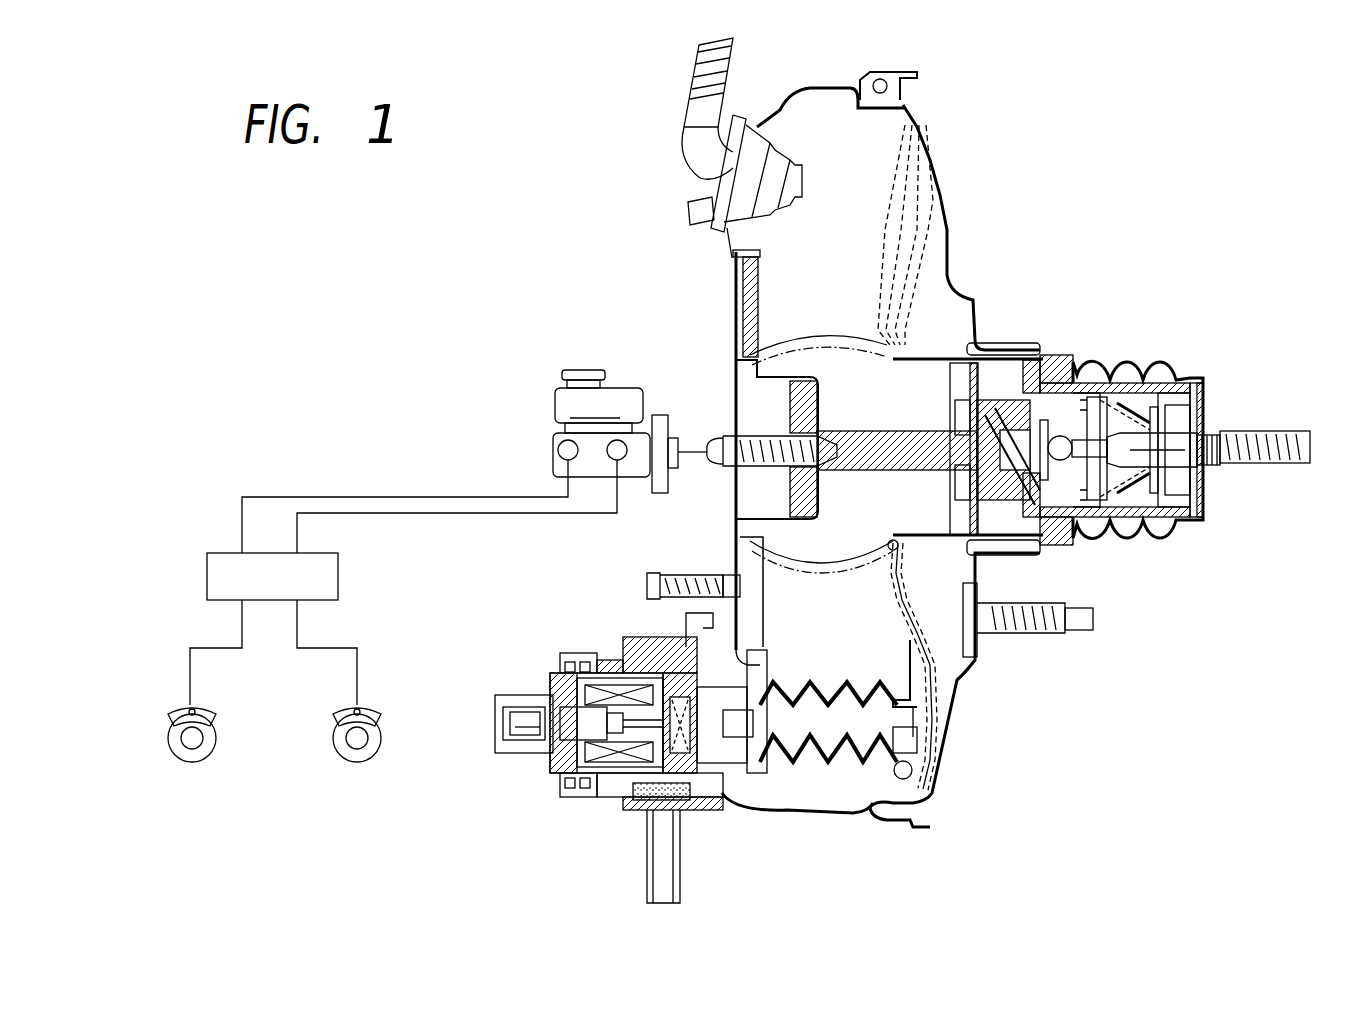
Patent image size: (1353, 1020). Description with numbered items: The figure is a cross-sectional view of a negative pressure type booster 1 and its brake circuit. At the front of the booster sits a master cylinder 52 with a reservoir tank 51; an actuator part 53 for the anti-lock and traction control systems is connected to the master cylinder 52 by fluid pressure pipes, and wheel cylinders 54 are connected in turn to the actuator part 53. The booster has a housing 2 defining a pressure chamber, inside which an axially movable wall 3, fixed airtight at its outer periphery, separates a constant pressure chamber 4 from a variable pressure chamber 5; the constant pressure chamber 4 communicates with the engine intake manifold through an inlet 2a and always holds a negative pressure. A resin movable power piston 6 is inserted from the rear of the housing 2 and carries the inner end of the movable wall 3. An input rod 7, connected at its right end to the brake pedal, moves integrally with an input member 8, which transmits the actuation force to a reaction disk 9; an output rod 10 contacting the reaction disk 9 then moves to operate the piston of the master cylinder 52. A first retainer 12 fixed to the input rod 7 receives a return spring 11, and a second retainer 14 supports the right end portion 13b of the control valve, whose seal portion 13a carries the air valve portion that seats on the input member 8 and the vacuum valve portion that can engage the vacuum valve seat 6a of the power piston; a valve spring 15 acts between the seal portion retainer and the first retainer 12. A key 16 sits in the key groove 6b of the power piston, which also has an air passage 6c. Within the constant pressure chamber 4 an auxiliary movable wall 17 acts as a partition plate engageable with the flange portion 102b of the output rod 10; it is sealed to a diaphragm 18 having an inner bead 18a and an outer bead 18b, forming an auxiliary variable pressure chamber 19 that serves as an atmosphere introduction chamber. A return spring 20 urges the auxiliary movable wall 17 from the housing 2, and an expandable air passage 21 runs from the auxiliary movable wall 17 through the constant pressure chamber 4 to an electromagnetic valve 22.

The negative pressure type booster 1 is at (1028, 206).
The housing 2 is at (826, 95).
The inlet 2a is at (690, 108).
The movable wall 3 is at (937, 196).
The constant pressure chamber 4 is at (858, 212).
The variable pressure chamber 5 is at (932, 265).
The movable power piston 6 is at (1113, 363).
The vacuum valve seat 6a is at (1097, 545).
The key groove 6b is at (1050, 355).
The air passage 6c is at (1053, 545).
The input rod 7 is at (1297, 477).
The input member 8 is at (1093, 383).
The reaction disk 9 is at (988, 345).
The output rod 10 is at (866, 426).
The return spring 11 is at (1147, 387).
The first retainer 12 is at (1193, 500).
The seal portion 13a is at (1110, 533).
The right end portion 13b is at (1140, 403).
The second retainer 14 is at (1180, 533).
The valve spring 15 is at (1137, 533).
The key 16 is at (1050, 530).
The auxiliary movable wall 17 is at (1018, 350).
The diaphragm 18 is at (920, 690).
The bead 18a is at (893, 557).
The bead 18b is at (912, 763).
The auxiliary variable pressure chamber 19 is at (920, 663).
The return spring 20 is at (785, 345).
The air passage 21 is at (817, 770).
The electromagnetic valve 22 is at (571, 810).
The reservoir tank 51 is at (555, 403).
The master cylinder 52 is at (648, 478).
The actuator part 53 is at (220, 553).
The wheel cylinders 54 is at (178, 702).
The flange portion 102b is at (948, 503).